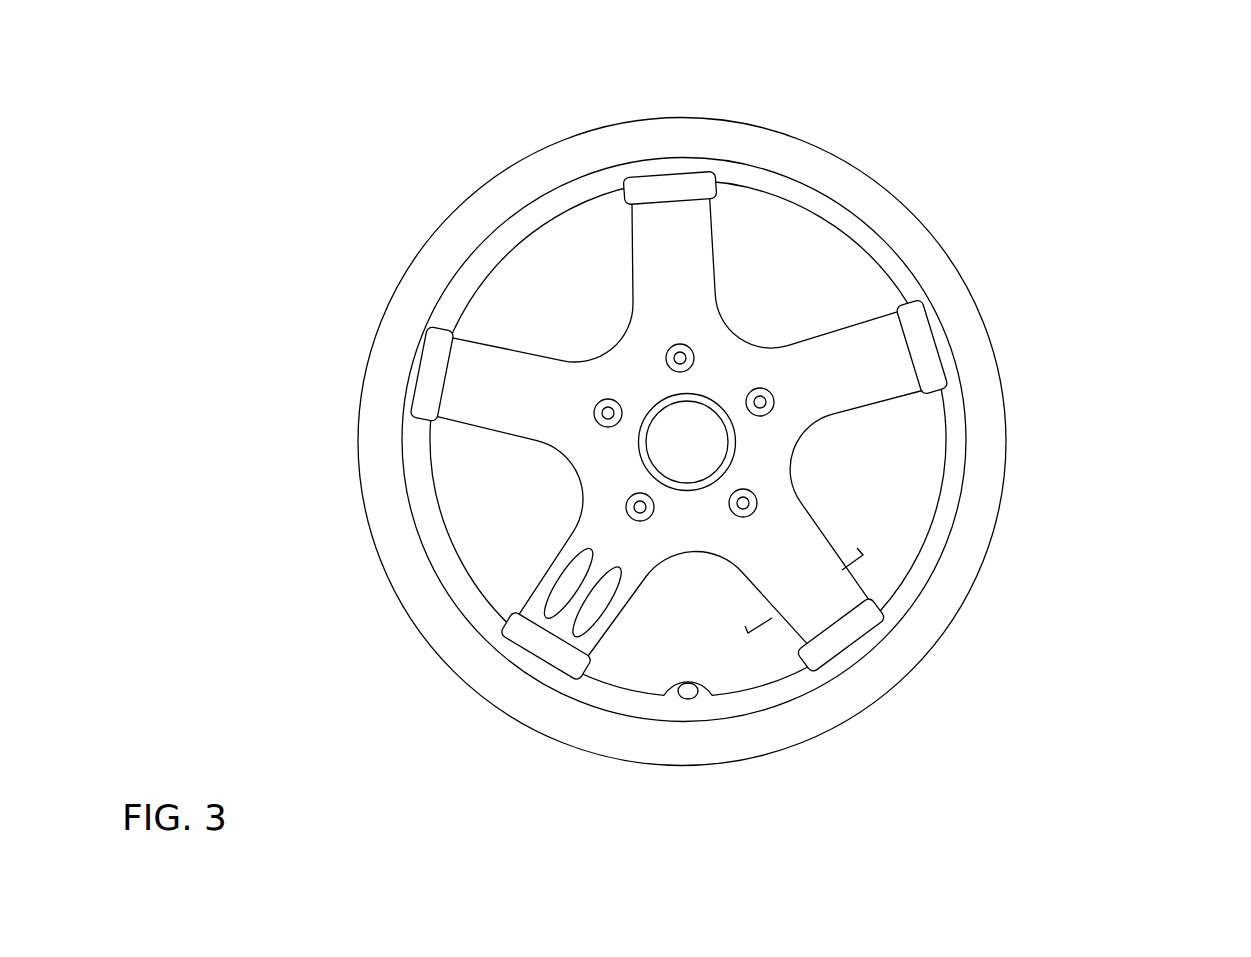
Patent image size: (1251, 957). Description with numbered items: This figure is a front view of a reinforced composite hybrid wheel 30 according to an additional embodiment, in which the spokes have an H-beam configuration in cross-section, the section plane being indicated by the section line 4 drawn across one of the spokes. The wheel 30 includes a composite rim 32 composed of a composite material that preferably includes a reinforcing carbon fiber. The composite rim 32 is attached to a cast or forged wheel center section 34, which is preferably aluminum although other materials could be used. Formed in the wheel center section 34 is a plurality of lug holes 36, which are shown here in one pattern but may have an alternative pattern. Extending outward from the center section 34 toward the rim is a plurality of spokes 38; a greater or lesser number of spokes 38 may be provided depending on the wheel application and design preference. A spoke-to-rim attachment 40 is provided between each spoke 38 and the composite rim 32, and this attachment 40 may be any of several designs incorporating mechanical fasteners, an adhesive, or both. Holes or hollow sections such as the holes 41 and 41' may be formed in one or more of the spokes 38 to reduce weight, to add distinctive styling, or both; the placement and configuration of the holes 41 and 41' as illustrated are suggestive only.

The reinforced composite hybrid wheel 30 is at (1122, 293).
The composite rim 32 is at (977, 482).
The wheel center section 34 is at (603, 462).
The lug holes 36 is at (608, 413).
The spokes 38 is at (688, 248).
The spoke-to-rim attachment 40 is at (920, 343).
The hole 41 is at (484, 629).
The hole 41' is at (612, 723).
The section line 4 is at (797, 572).